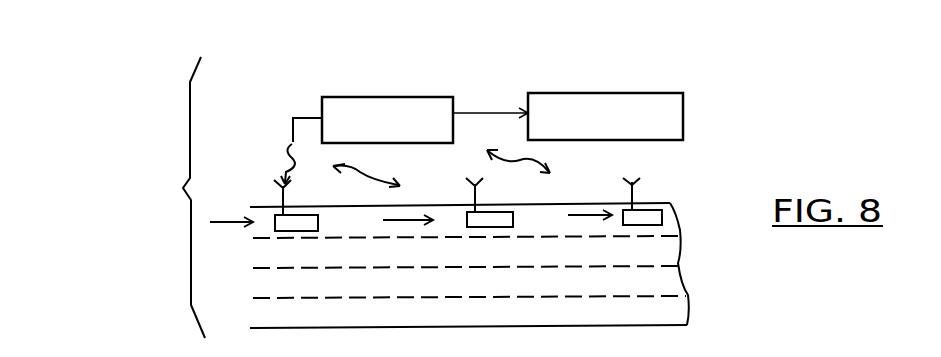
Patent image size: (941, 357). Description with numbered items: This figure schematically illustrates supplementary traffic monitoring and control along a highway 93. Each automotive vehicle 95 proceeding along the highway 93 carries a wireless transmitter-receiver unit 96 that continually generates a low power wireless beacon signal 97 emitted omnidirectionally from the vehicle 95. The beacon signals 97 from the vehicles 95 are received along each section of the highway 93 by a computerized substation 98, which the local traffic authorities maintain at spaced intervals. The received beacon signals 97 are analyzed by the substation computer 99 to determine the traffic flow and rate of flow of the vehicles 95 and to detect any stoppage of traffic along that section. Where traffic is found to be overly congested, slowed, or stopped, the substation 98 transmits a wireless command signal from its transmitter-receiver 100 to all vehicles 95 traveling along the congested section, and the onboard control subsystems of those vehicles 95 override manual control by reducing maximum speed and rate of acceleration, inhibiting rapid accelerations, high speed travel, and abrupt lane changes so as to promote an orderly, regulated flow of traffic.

The highway 93 is at (210, 243).
The automotive vehicle 95 is at (283, 231).
The wireless transmitter-receiver unit 96 is at (281, 192).
The wireless beacon signal 97 is at (349, 171).
The computerized substation 98 is at (373, 99).
The substation computer 99 is at (601, 93).
The transmitter-receiver 100 is at (300, 148).